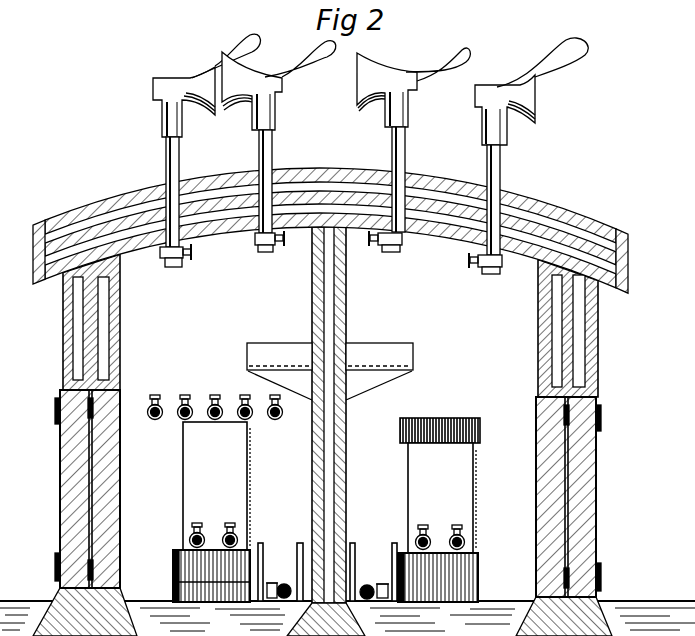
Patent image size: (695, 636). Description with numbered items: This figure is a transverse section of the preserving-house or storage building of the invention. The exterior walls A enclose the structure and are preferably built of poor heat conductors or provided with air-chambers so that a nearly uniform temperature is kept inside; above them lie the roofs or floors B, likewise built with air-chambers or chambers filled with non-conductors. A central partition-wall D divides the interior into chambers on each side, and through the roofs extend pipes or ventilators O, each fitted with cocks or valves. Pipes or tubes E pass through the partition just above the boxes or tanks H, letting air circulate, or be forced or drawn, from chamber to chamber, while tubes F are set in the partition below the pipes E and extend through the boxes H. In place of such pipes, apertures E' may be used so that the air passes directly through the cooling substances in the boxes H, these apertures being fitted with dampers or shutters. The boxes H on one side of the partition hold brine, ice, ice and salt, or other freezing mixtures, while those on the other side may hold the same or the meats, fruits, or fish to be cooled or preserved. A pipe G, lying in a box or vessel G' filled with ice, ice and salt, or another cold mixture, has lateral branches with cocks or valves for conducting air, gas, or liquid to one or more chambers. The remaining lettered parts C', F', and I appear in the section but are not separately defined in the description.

The exterior walls A is at (343, 325).
The roofs or floors B is at (330, 223).
The door C' is at (328, 493).
The partition-walls D is at (330, 431).
The pipes or tubes E is at (217, 413).
The apertures E' is at (440, 421).
The tubes or pipes F is at (212, 533).
The lower nozzles F' is at (446, 537).
The pipe G is at (327, 583).
The box or vessel G' is at (327, 569).
The boxes, vats, tanks, or vessels H is at (329, 487).
The grate / lower tank I is at (325, 576).
The pipes or ventilators O is at (370, 154).